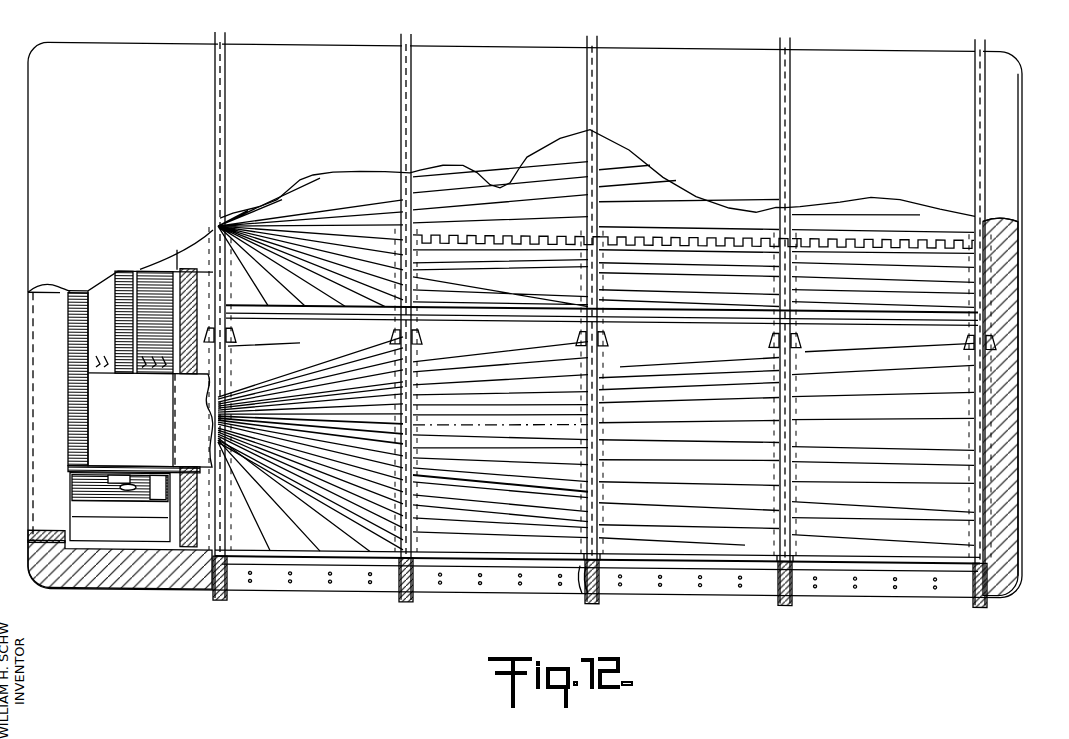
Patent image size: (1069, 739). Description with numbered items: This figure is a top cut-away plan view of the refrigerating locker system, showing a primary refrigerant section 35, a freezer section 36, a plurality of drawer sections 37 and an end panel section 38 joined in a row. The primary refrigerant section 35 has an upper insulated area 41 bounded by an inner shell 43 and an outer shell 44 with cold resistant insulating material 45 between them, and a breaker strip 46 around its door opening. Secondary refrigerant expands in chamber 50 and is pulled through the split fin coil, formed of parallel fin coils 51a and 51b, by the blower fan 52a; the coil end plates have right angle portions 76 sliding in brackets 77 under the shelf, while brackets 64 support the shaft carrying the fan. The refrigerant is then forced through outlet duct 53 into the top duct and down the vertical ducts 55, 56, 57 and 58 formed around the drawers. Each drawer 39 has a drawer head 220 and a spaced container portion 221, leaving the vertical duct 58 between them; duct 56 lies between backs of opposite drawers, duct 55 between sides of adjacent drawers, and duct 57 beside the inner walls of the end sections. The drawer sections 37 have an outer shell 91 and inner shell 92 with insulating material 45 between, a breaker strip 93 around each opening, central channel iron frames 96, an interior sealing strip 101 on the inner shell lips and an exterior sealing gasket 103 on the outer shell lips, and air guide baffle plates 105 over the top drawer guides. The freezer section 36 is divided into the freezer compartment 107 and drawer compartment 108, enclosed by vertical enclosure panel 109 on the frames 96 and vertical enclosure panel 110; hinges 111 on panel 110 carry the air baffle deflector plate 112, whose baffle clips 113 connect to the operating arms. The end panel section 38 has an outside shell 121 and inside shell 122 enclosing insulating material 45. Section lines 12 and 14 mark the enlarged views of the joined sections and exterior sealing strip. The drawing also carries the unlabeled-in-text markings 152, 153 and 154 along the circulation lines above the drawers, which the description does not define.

The primary refrigerant section 35 is at (145, 51).
The freezer section 36 is at (327, 47).
The drawer section 37 is at (514, 45).
The end panel section 38 is at (1002, 48).
The exterior sealing gasket 103 is at (230, 50).
The outer shell 44 is at (129, 104).
The outer shell 91 is at (323, 108).
The outside shell 121 is at (1022, 102).
The container portion 221 is at (444, 186).
The upper light ray 154 is at (478, 200).
The drawer 39 is at (510, 226).
The guide line 153 is at (540, 233).
The light ray 152 is at (520, 271).
The air guide baffle plate 105 is at (348, 210).
The drawer compartment 108 is at (320, 281).
The vertical duct 56 is at (326, 296).
The channel iron frame 96 is at (960, 333).
The interior sealing strip 101 is at (962, 452).
The vertical enclosure panel 109 is at (340, 334).
The hinge 111 is at (410, 350).
The baffle clip 113 is at (245, 383).
The vertical enclosure panel 110 is at (408, 384).
The freezer compartment 107 is at (332, 442).
The air baffle deflector plate 112 is at (342, 476).
The vertical duct 57 is at (244, 520).
The vertical duct 58 is at (340, 550).
The vertical duct 55 is at (414, 504).
The drawer head 220 is at (502, 596).
The drain arrow 14 is at (429, 605).
The drain arrow 12 is at (738, 525).
The inner shell 92 is at (572, 547).
The breaker strip 93 is at (582, 591).
The insulating material 45 is at (76, 586).
The inside shell 122 is at (986, 211).
The chamber 50 is at (66, 448).
The fin coil 51b is at (84, 288).
The fin coil 51a is at (146, 268).
The blower fan 52a is at (204, 242).
The upper insulated area 41 is at (128, 392).
The outlet duct 53 is at (182, 404).
The bracket 64 is at (134, 466).
The inner shell 43 is at (97, 527).
The right angle portion 76 is at (146, 510).
The bracket 77 is at (148, 521).
The breaker strip 46 is at (37, 528).